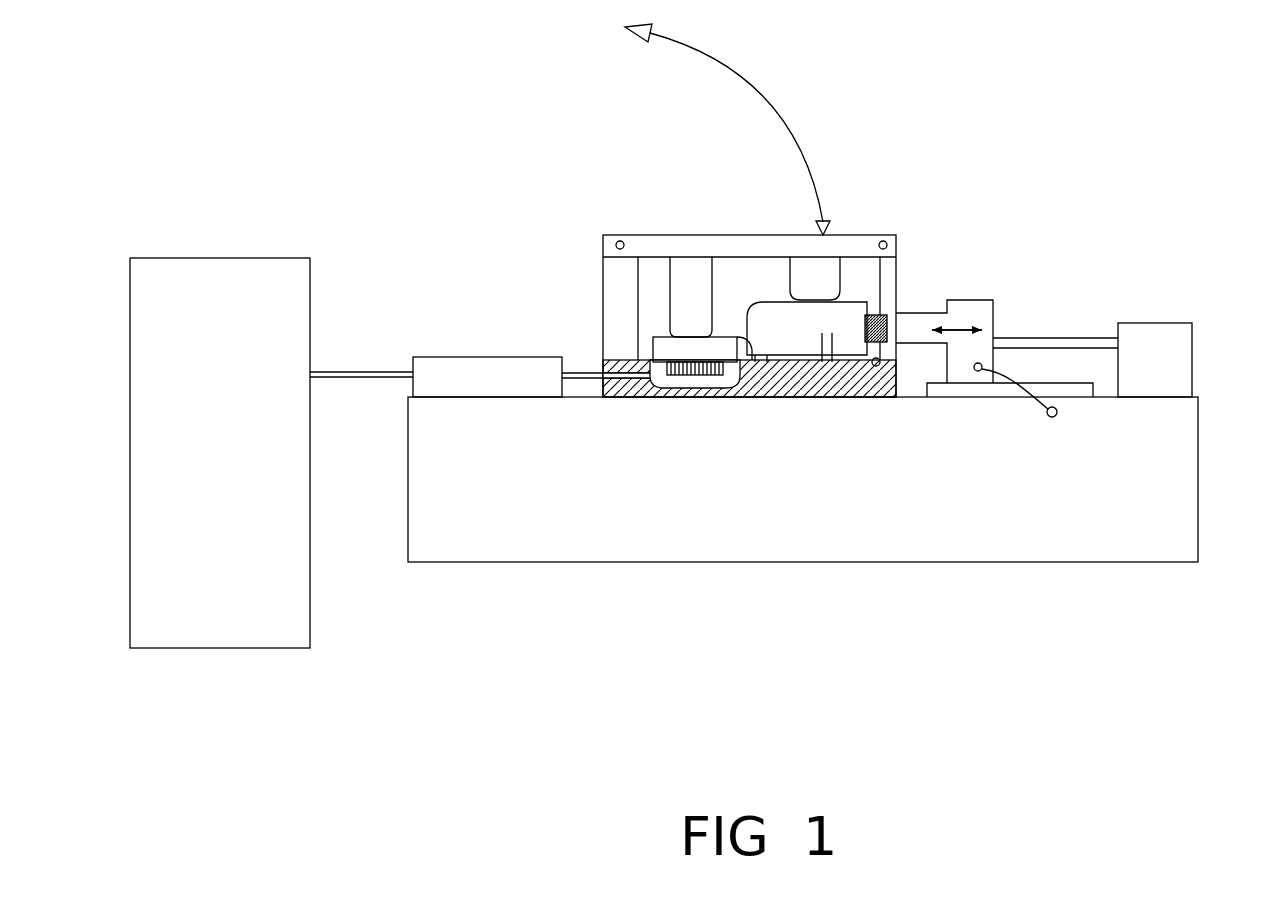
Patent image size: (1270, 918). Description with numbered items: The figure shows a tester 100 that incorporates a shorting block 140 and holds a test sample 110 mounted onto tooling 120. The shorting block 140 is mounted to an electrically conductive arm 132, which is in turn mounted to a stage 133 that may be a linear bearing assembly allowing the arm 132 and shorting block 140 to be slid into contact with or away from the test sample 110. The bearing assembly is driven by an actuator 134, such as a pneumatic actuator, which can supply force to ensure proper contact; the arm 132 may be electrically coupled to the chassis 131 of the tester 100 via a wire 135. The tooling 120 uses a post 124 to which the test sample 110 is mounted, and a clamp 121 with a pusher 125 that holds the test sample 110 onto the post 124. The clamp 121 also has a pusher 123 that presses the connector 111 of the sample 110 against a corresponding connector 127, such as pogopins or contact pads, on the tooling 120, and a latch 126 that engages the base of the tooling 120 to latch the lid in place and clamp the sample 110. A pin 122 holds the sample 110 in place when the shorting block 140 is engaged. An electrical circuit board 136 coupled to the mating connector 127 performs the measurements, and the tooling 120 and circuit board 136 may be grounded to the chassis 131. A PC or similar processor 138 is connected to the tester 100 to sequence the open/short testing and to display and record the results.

The tester 100 is at (367, 762).
The test sample 110 is at (847, 338).
The connector 111 is at (651, 347).
The tooling 120 is at (603, 290).
The clamp 121 is at (667, 232).
The pin 122 is at (748, 340).
The pusher 123 is at (668, 297).
The post 124 is at (800, 375).
The pusher 125 is at (803, 277).
The latch 126 is at (878, 366).
The connector 127 is at (695, 375).
The chassis 131 is at (1027, 563).
The arm 132 is at (915, 308).
The stage 133 is at (1010, 402).
The actuator 134 is at (1148, 322).
The wire 135 is at (1012, 368).
The electrical circuit board 136 is at (430, 355).
The processor 138 is at (198, 257).
The shorting block 140 is at (875, 310).